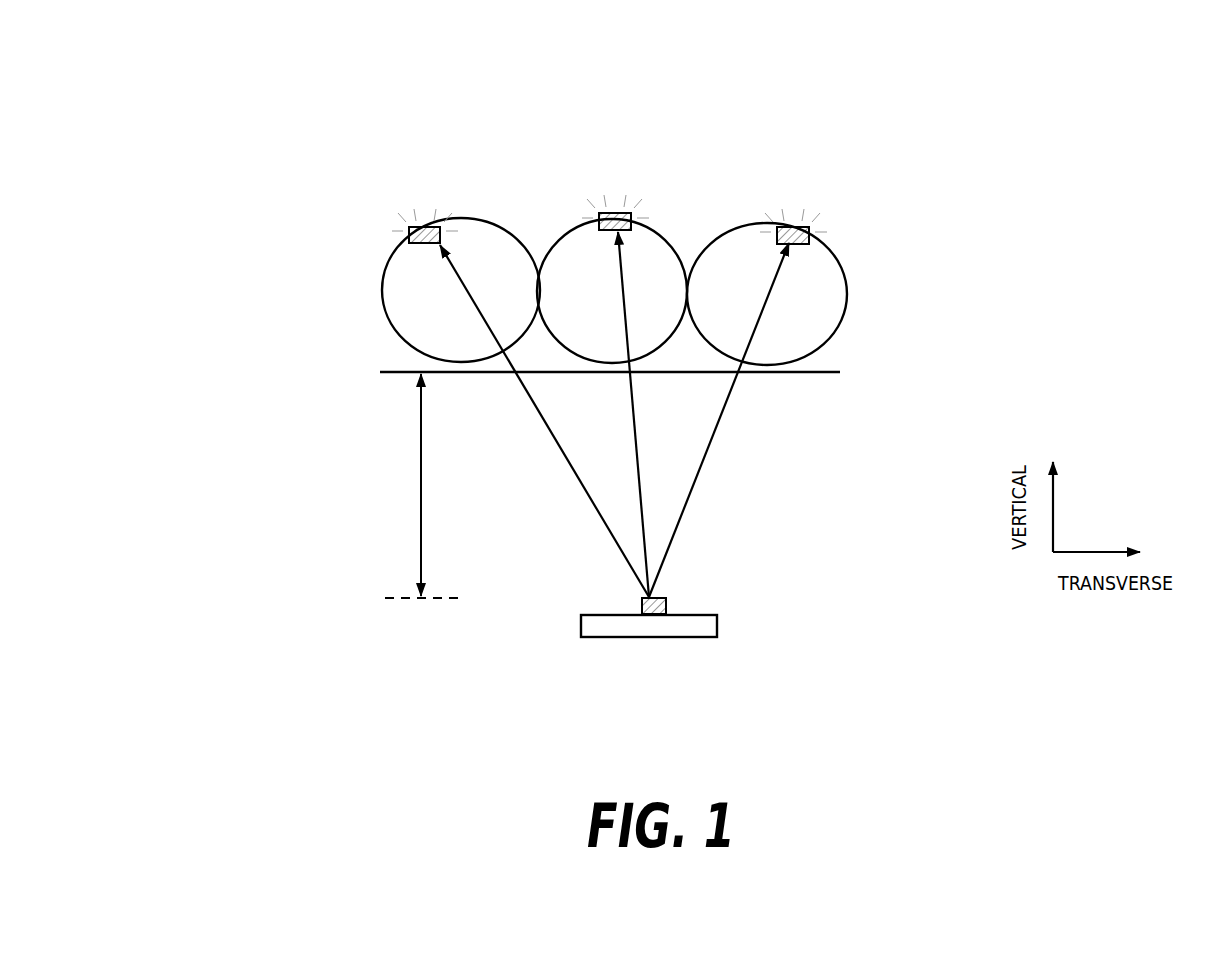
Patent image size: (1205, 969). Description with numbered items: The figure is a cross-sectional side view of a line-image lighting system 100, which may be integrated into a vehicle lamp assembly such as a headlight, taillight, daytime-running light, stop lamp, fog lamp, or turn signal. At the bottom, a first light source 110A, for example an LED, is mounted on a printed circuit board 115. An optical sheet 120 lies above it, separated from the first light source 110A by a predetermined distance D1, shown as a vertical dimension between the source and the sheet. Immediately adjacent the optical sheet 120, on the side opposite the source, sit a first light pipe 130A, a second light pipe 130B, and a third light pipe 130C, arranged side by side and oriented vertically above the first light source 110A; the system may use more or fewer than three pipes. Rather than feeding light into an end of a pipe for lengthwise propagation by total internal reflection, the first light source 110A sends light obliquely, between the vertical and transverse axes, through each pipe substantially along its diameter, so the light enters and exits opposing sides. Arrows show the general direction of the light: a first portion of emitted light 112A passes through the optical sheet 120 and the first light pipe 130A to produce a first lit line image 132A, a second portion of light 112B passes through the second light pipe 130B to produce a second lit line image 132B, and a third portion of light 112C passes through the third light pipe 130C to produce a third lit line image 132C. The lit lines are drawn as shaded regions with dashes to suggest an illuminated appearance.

The line-image lighting system 100 is at (282, 122).
The first light source 110A is at (667, 606).
The first portion of emitted light 112A is at (592, 502).
The second portion of light 112B is at (641, 482).
The third portion of light 112C is at (688, 504).
The printed circuit board 115 is at (690, 637).
The optical sheet 120 is at (840, 372).
The first light pipe 130A is at (381, 292).
The second light pipe 130B is at (663, 237).
The third light pipe 130C is at (847, 286).
The first lit line image 132A is at (421, 227).
The second lit line image 132B is at (611, 213).
The third lit line image 132C is at (793, 227).
The predetermined distance D1 is at (422, 486).